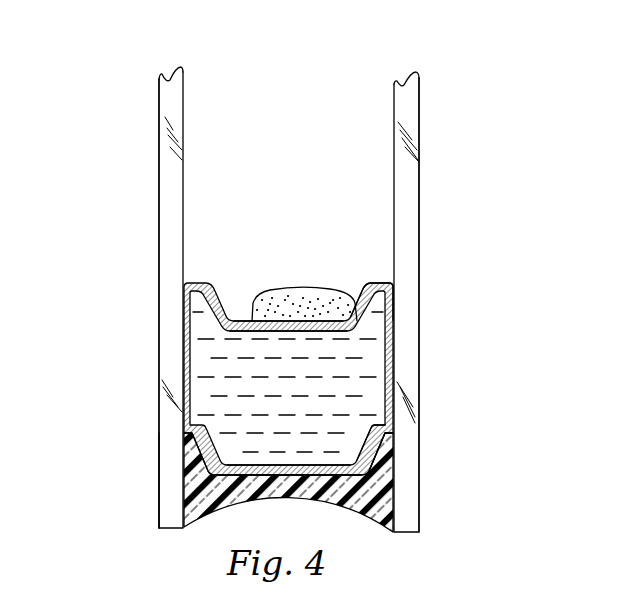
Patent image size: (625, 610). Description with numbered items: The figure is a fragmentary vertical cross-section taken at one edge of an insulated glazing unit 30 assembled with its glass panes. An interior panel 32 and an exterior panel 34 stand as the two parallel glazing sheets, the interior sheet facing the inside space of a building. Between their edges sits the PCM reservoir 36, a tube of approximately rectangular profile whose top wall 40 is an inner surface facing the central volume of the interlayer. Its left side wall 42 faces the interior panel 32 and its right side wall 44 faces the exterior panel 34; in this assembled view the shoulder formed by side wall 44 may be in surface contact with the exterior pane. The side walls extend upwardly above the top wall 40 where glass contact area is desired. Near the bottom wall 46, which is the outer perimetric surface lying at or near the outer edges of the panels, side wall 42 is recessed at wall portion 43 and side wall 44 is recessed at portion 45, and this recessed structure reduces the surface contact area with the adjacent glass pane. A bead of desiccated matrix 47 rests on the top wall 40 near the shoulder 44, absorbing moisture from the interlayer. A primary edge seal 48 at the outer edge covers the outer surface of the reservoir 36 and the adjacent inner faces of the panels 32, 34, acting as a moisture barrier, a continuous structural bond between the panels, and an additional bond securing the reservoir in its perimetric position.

The insulated glazing unit 30 is at (130, 119).
The interior panel 32 is at (158, 198).
The exterior panel 34 is at (420, 165).
The PCM reservoir 36 is at (420, 310).
The top wall 40 is at (253, 323).
The left side wall 42 is at (184, 424).
The recessed wall portion 43 is at (160, 483).
The right side wall 44 is at (420, 355).
The recessed portion 45 is at (420, 423).
The bottom wall 46 is at (252, 465).
The desiccated matrix 47 is at (302, 293).
The primary edge seal 48 is at (420, 487).